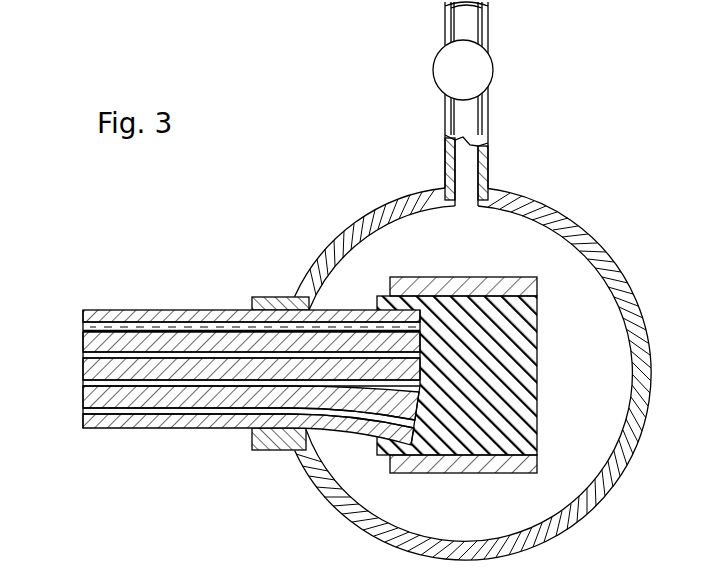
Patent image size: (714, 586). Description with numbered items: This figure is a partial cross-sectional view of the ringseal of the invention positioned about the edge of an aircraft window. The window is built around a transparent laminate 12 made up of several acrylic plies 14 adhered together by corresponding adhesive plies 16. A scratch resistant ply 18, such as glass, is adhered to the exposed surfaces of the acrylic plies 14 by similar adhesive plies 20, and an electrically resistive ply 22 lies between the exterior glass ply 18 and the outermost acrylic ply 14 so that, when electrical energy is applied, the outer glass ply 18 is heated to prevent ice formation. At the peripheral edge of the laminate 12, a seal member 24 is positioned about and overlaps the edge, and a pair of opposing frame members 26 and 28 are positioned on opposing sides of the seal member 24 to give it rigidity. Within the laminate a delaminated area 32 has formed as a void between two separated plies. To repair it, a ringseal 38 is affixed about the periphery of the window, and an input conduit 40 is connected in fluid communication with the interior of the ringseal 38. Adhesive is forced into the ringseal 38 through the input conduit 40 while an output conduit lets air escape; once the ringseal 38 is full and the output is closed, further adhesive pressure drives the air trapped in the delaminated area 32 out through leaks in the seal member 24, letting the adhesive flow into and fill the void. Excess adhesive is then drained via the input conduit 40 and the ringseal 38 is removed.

The transparent laminate 12 is at (216, 357).
The acrylic ply 14 is at (84, 340).
The adhesive ply 16 is at (84, 355).
The scratch resistant ply 18 is at (229, 309).
The adhesive ply 20 is at (84, 316).
The electrically resistive ply 22 is at (84, 328).
The seal member 24 is at (523, 348).
The frame member 26 is at (438, 277).
The frame member 28 is at (452, 476).
The delaminated area 32 is at (405, 432).
The ringseal 38 is at (628, 308).
The input conduit 40 is at (468, 113).